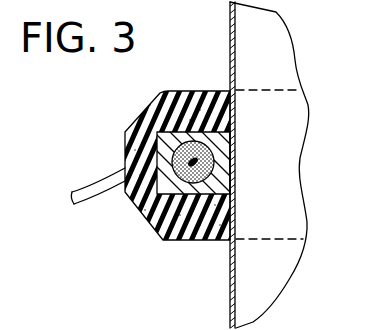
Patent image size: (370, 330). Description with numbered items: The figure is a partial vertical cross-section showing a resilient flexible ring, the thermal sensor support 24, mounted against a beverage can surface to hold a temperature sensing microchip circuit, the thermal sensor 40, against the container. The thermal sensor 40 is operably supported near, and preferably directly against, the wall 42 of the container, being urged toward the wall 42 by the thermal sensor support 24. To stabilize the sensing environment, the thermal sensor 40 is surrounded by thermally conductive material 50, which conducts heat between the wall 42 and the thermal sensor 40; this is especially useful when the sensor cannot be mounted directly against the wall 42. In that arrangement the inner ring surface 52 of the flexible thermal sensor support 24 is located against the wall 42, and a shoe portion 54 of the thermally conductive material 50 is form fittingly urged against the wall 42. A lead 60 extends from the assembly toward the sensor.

The thermal sensor support 24 is at (163, 242).
The thermal sensor 40 is at (234, 129).
The wall 42 is at (230, 278).
The thermally conductive material 50 is at (235, 159).
The inner ring surface 52 is at (235, 227).
The shoe portion 54 is at (233, 188).
The lead wire 60 is at (104, 185).